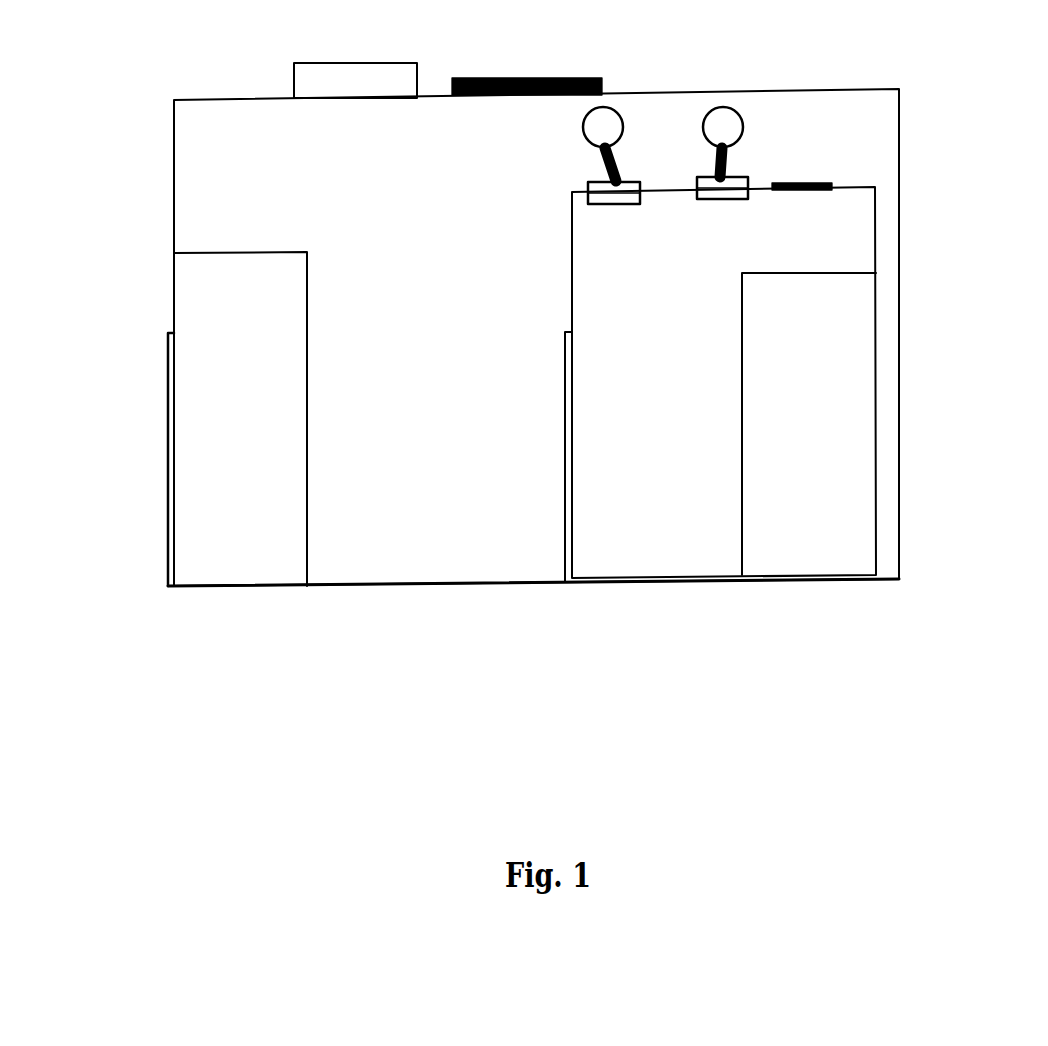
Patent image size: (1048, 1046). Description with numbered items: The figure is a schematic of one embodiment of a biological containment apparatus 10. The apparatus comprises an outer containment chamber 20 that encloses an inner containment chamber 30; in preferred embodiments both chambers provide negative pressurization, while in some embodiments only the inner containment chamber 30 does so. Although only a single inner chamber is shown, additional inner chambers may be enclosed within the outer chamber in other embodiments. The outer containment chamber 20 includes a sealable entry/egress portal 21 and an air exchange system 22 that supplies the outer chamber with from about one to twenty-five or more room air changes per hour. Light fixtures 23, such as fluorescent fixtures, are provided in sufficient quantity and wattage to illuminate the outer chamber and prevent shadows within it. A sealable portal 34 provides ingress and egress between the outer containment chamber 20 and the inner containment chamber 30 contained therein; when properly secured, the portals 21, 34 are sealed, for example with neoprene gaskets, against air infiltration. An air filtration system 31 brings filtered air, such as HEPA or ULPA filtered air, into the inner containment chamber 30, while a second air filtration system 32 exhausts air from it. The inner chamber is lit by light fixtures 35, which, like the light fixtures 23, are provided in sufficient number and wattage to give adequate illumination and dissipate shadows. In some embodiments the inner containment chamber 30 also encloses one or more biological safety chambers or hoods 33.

The biological containment apparatus 10 is at (86, 84).
The outer containment chamber 20 is at (515, 337).
The sealable entry/egress portal 21 is at (152, 340).
The air exchange system 22 is at (355, 55).
The light fixture 23 is at (527, 63).
The inner containment chamber 30 is at (691, 382).
The air filtration system 31 is at (578, 155).
The air filtration system 32 is at (695, 153).
The biological safety chamber/hood 33 is at (848, 312).
The sealable portal 34 is at (560, 355).
The light fixture 35 is at (816, 176).